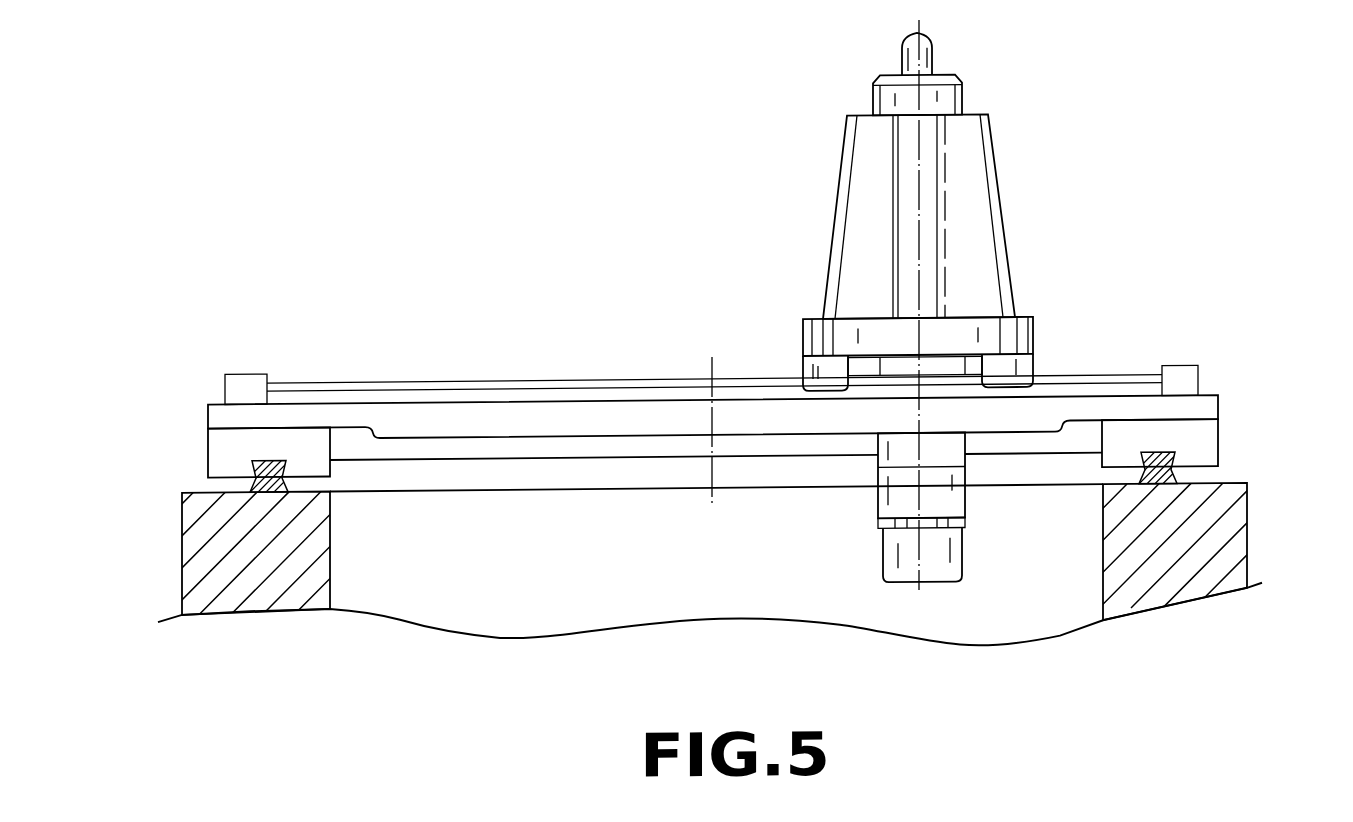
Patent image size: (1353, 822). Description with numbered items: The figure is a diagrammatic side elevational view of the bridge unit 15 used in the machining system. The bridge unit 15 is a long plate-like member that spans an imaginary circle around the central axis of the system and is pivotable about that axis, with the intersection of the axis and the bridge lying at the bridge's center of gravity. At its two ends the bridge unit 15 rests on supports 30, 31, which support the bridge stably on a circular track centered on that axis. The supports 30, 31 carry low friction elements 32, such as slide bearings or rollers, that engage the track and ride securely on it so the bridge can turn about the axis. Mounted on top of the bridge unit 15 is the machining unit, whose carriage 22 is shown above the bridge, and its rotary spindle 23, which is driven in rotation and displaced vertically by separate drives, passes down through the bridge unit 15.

The bridge unit 15 is at (609, 324).
The carriage 22 is at (1033, 330).
The rotary spindle 23 is at (950, 444).
The support 30 is at (208, 450).
The support 31 is at (1220, 435).
The low friction element 32 is at (273, 456).